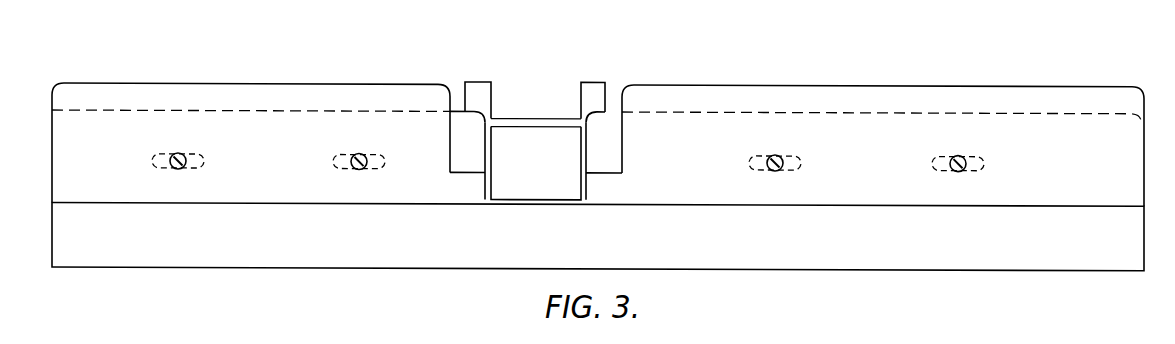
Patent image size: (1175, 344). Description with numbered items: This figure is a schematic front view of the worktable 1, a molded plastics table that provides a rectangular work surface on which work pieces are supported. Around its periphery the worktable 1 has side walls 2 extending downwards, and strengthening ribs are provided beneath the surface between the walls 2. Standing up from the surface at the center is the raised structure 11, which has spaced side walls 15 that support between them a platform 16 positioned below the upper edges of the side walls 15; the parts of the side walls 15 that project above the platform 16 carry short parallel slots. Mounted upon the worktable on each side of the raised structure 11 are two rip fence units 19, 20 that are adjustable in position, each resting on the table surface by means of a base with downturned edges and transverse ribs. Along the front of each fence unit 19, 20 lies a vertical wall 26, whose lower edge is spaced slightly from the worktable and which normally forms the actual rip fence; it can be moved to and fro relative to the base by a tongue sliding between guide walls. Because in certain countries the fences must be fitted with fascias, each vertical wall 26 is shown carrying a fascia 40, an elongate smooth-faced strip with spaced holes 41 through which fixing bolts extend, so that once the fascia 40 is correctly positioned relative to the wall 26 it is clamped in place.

The worktable 1 is at (598, 152).
The side walls 2 is at (702, 251).
The raised structure 11 is at (592, 81).
The side walls 15 is at (476, 90).
The platform 16 is at (535, 116).
The rip fence 19 is at (893, 87).
The rip fence 20 is at (238, 83).
The vertical wall 26 is at (148, 108).
The fascia 40 is at (275, 175).
The holes 41 is at (164, 154).